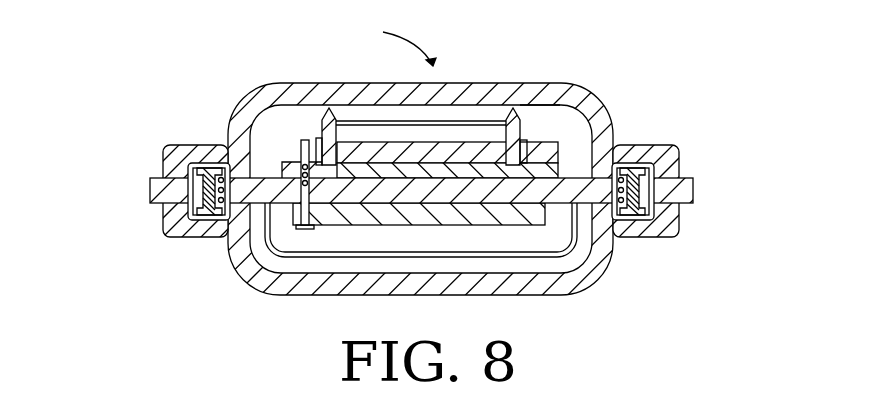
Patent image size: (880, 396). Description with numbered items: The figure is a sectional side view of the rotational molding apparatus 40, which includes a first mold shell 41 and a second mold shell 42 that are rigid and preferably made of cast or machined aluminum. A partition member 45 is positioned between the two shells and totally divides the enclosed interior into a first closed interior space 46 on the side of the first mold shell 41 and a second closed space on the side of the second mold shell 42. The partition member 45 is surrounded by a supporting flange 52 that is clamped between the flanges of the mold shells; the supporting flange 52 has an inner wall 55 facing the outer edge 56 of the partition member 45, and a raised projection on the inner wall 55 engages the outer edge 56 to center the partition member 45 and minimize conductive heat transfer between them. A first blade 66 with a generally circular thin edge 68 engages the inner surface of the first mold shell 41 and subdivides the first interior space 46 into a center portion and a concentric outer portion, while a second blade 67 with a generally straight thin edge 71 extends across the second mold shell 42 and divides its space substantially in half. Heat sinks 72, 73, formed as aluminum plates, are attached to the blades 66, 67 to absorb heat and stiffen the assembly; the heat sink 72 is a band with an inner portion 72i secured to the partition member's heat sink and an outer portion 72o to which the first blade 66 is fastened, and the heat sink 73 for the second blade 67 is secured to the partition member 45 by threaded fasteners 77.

The rotational molding apparatus 40 is at (389, 39).
The first mold shell 41 is at (533, 144).
The second mold shell 42 is at (600, 270).
The partition member 45 is at (563, 175).
The first closed interior space 46 is at (300, 118).
The supporting flange 52 is at (158, 190).
The inner wall 55 is at (222, 145).
The outer edge 56 is at (165, 225).
The first blade 66 is at (327, 107).
The second blade 67 is at (340, 245).
The thin edge 68 is at (490, 110).
The thin edge 71 is at (281, 265).
The heat sink 72 is at (585, 150).
The inner portion of heat sink 72i is at (303, 120).
The outer portion of heat sink 72o is at (525, 93).
The heat sink 73 is at (530, 224).
The threaded fasteners 77 is at (298, 214).